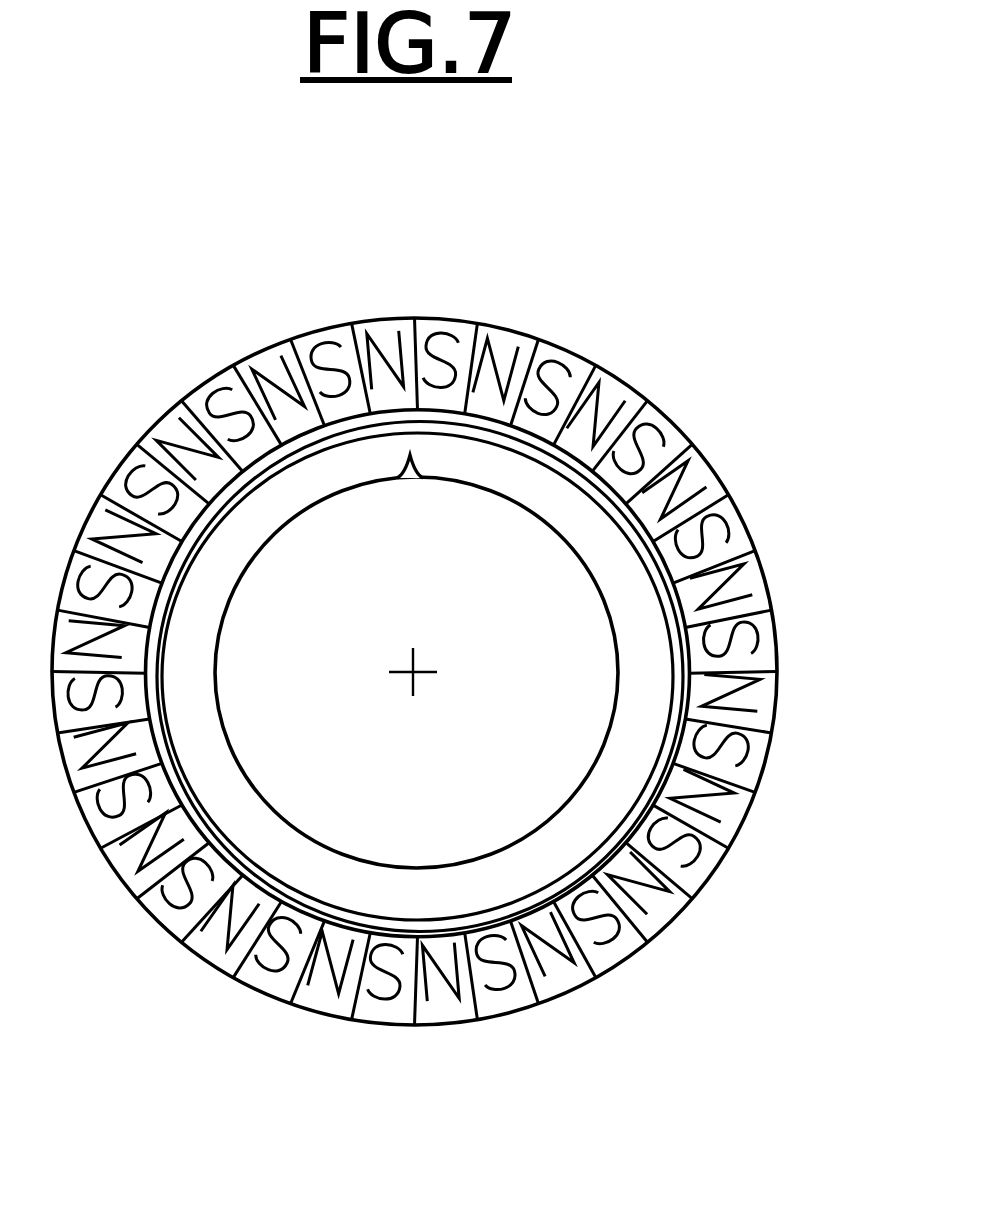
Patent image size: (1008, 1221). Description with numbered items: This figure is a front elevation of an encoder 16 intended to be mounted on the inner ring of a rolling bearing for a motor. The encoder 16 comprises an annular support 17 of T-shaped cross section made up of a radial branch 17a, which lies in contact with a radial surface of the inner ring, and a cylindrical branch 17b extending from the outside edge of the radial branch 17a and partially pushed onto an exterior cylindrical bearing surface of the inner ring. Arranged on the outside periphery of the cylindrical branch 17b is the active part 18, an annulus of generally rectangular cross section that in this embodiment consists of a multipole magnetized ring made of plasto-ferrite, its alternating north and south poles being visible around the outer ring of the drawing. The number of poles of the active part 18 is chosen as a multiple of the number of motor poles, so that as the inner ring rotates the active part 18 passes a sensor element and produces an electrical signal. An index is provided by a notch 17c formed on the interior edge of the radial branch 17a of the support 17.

The encoder 16 is at (758, 412).
The annular support 17 is at (585, 741).
The radial branch 17a is at (198, 575).
The cylindrical branch 17b is at (230, 852).
The notch 17c is at (410, 475).
The active part 18 is at (545, 353).